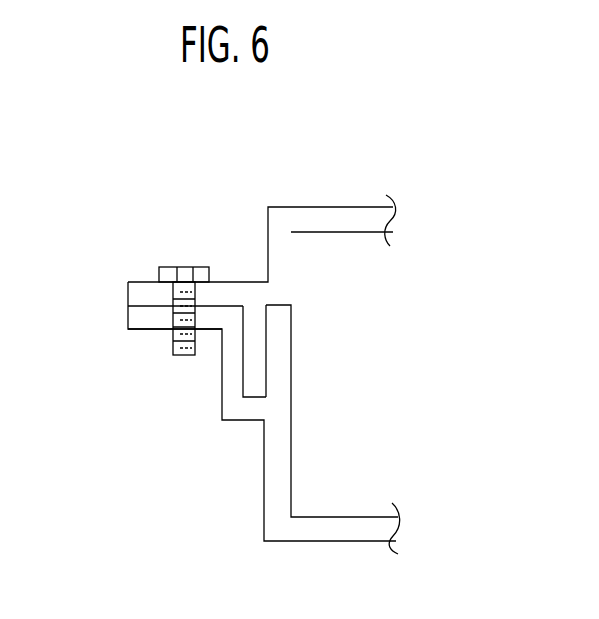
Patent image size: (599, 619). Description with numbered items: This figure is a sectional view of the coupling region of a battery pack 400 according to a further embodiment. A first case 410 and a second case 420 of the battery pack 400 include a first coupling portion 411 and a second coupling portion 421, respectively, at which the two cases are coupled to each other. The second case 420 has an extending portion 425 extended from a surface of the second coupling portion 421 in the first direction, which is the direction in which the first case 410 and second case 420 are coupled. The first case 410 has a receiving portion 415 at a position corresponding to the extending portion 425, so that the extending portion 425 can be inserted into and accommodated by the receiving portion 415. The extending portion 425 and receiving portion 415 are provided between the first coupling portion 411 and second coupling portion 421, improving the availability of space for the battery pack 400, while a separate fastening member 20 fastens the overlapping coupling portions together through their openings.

The battery pack 400 is at (453, 132).
The second case 420 is at (221, 331).
The second coupling portion 421 is at (143, 297).
The extending portion 425 is at (252, 351).
The first case 410 is at (215, 449).
The first coupling portion 411 is at (143, 319).
The receiving portion 415 is at (255, 397).
The fastening member 20 is at (182, 262).